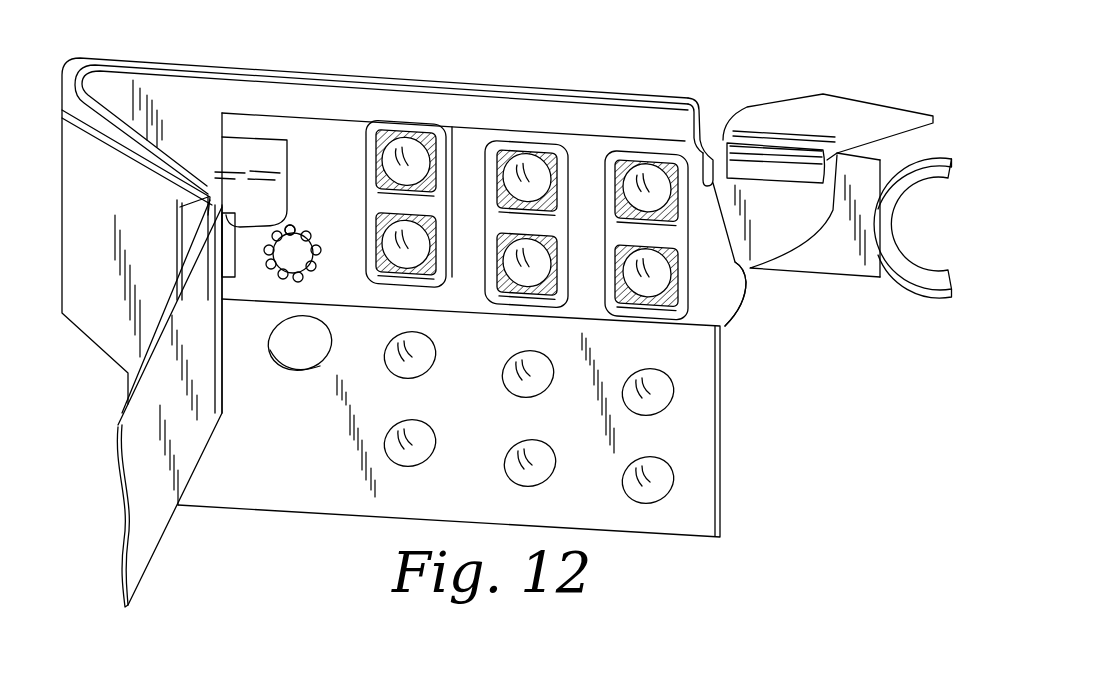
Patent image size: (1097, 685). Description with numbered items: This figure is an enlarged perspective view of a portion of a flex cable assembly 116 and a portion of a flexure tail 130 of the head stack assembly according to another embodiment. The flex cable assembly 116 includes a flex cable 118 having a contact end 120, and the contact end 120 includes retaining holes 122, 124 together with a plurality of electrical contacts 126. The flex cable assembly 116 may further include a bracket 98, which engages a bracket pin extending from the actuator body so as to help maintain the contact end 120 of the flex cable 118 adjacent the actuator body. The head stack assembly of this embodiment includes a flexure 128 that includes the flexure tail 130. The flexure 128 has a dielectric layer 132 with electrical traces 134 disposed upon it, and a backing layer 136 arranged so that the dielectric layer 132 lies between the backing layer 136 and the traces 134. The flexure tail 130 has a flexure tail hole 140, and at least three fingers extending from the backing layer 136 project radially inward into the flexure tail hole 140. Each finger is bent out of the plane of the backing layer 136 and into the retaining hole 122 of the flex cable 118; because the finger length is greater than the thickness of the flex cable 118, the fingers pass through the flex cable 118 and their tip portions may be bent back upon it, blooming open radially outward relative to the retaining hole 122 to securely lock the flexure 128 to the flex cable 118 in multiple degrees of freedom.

The bracket 98 is at (838, 258).
The flex cable assembly 116 is at (150, 560).
The flex cable 118 is at (123, 542).
The contact end 120 is at (587, 113).
The retaining hole 122 is at (318, 240).
The retaining hole 124 is at (302, 360).
The electrical contacts 126 is at (415, 150).
The flexure 128 is at (857, 117).
The flexure tail 130 is at (743, 275).
The dielectric layer 132 is at (212, 176).
The electrical traces 134 is at (383, 130).
The backing layer 136 is at (470, 130).
The flexure tail hole 140 is at (293, 232).